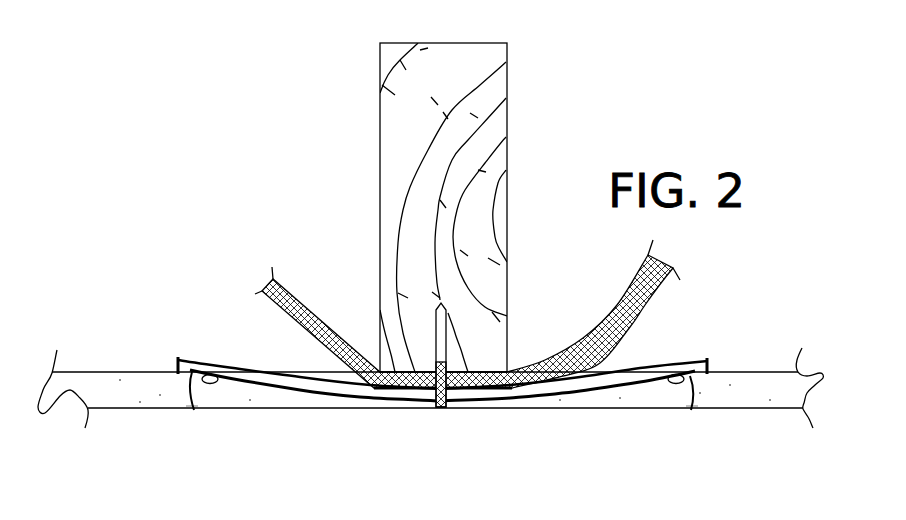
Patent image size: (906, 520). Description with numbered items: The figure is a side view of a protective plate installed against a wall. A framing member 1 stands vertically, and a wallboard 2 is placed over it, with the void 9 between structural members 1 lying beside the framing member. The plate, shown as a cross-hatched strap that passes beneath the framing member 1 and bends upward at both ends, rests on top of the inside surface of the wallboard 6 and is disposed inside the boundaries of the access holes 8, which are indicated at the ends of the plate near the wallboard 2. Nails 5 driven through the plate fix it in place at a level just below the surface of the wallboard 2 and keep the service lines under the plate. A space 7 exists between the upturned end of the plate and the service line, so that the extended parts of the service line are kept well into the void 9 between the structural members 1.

The framing member 1 is at (381, 85).
The wallboard 2 is at (762, 408).
The nails 5 is at (437, 407).
The inside surface of wallboard 6 is at (176, 364).
The space 7 is at (658, 302).
The access holes 8 is at (189, 409).
The void 9 is at (587, 138).